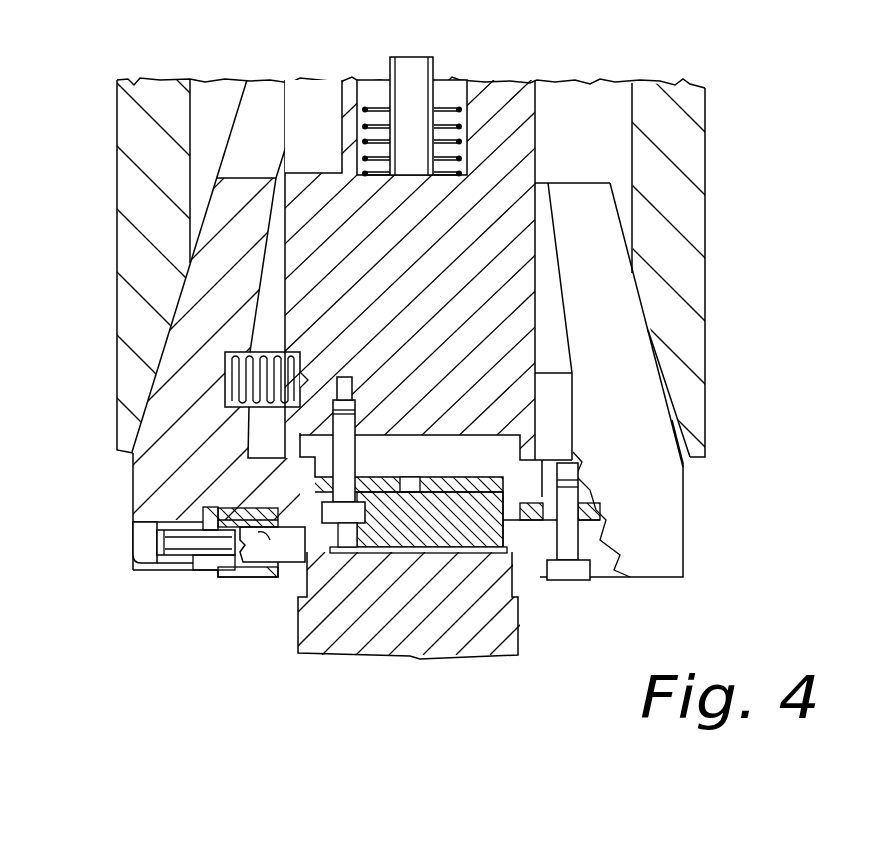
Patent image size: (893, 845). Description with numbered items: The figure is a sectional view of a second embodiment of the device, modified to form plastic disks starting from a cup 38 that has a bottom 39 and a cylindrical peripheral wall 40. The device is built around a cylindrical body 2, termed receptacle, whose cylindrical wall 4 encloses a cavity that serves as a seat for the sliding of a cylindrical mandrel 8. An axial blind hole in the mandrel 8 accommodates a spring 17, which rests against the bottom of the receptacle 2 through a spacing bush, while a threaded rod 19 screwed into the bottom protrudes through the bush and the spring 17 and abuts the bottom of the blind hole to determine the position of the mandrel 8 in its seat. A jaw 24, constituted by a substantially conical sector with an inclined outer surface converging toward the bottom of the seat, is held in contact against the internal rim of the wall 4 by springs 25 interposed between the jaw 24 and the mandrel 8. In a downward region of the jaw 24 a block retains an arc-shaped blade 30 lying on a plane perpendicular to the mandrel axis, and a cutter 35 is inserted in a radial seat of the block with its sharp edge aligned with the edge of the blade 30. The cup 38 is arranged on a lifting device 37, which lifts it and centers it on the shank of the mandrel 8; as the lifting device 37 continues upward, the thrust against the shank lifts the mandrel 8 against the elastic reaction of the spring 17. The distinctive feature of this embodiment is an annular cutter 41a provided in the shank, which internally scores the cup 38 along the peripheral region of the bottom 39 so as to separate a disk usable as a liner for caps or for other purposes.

The cylindrical body 2 is at (716, 218).
The cylindrical wall 4 is at (138, 194).
The cylindrical mandrel 8 is at (510, 112).
The spring 17 is at (447, 110).
The threaded rod 19 is at (400, 30).
The jaw 24 is at (205, 302).
The springs 25 is at (226, 380).
The blade 30 is at (540, 562).
The cutter 35 is at (232, 505).
The lifting device 37 is at (508, 640).
The cup 38 is at (326, 562).
The bottom 39 is at (405, 553).
The cylindrical peripheral wall 40 is at (540, 516).
The annular cutter 41a is at (473, 554).